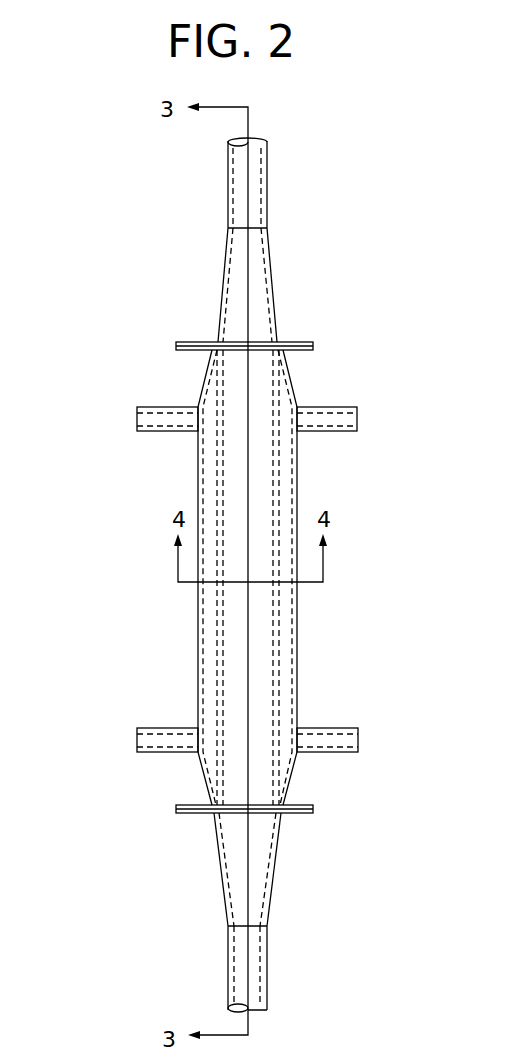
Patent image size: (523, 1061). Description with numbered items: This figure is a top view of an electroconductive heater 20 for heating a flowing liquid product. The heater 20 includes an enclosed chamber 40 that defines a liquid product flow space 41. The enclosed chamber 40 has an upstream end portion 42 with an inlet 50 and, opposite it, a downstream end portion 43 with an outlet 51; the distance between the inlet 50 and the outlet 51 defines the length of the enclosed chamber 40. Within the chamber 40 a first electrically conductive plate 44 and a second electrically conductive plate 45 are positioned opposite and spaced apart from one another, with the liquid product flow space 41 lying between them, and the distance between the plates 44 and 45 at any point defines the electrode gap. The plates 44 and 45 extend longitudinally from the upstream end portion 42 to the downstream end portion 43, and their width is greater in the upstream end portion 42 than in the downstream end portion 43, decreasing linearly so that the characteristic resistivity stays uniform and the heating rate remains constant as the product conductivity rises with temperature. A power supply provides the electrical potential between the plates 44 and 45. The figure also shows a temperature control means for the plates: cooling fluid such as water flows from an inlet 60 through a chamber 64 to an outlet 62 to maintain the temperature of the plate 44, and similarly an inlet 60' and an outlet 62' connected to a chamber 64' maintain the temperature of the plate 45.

The electroconductive heater 20 is at (298, 168).
The enclosed chamber 40 is at (282, 385).
The liquid product flow space 41 is at (257, 407).
The upstream end portion 42 is at (166, 789).
The downstream end portion 43 is at (178, 376).
The first electrically conductive plate 44 is at (218, 477).
The second electrically conductive plate 45 is at (278, 487).
The inlet 50 is at (293, 813).
The outlet 51 is at (292, 340).
The inlet 60 is at (104, 390).
The inlet 60' is at (349, 447).
The outlet 62 is at (108, 708).
The outlet 62' is at (351, 711).
The chamber 64 is at (139, 577).
The chamber 64' is at (338, 577).